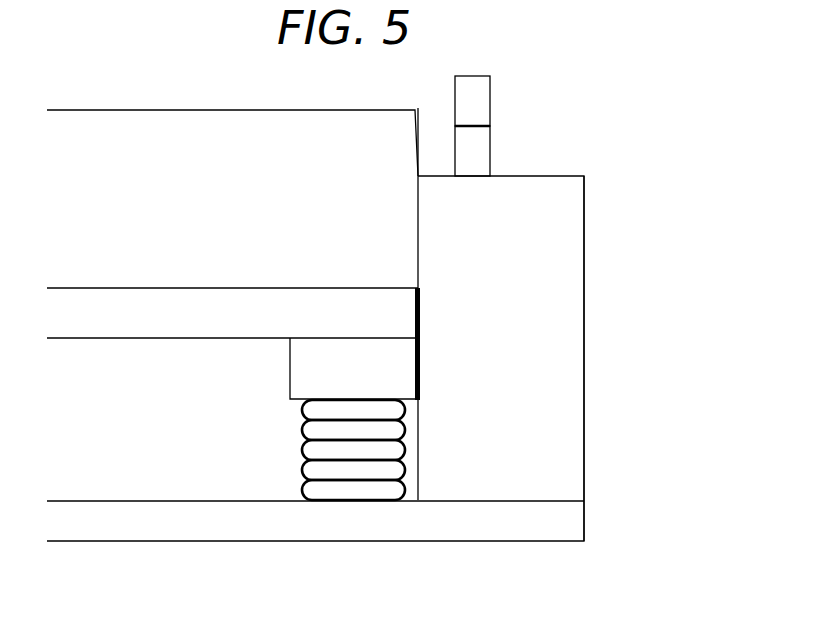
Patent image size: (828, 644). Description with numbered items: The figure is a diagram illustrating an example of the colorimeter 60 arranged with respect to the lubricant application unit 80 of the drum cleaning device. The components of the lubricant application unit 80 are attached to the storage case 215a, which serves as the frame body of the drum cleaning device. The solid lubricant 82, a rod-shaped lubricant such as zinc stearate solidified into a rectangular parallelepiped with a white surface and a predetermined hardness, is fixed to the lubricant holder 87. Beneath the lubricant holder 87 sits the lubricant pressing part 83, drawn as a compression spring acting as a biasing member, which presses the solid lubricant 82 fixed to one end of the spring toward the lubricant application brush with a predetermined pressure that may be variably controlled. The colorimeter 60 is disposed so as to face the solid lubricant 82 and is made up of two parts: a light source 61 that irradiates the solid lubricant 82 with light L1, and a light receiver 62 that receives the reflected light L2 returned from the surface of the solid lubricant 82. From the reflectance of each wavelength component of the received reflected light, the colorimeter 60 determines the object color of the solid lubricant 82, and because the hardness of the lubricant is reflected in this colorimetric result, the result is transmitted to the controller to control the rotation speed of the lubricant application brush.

The solid lubricant 82 is at (221, 112).
The lubricant holder 87 is at (152, 340).
The lubricant pressing part 83 is at (333, 452).
The lubricant application unit 80 is at (622, 207).
The storage case 215a is at (584, 346).
The colorimeter 60 is at (528, 126).
The light source 61 is at (491, 100).
The light receiver 62 is at (500, 151).
The light L1 is at (452, 108).
The reflected light L2 is at (418, 128).